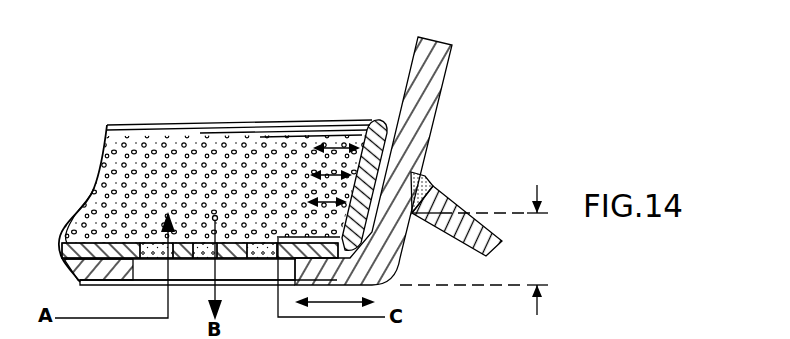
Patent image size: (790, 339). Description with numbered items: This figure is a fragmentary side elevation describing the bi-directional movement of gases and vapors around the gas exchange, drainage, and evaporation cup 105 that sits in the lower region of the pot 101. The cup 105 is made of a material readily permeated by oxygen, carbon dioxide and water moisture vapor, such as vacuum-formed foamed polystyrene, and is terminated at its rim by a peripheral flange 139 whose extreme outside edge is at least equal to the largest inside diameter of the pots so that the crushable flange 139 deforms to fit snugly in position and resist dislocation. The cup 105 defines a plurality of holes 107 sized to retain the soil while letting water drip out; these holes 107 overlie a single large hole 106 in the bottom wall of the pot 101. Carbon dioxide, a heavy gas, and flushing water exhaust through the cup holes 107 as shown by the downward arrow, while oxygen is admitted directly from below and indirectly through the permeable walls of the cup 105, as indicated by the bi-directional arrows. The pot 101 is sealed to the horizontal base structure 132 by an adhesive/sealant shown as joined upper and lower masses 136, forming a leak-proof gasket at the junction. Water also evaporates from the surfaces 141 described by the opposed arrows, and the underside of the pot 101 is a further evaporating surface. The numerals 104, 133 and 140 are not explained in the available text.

The pot 101 is at (433, 78).
The seat frame 104 is at (409, 161).
The gas permeable cup 105 is at (115, 181).
The single large hole 106 is at (147, 268).
The holes 107 is at (265, 258).
The horizontal base structure 132 is at (422, 218).
The mounting bracket 133 is at (470, 232).
The upper and lower masses of adhesive/sealant 136 is at (425, 177).
The peripheral flange 139 is at (388, 120).
The cover 140 is at (368, 128).
The evaporating surfaces 141 is at (474, 250).